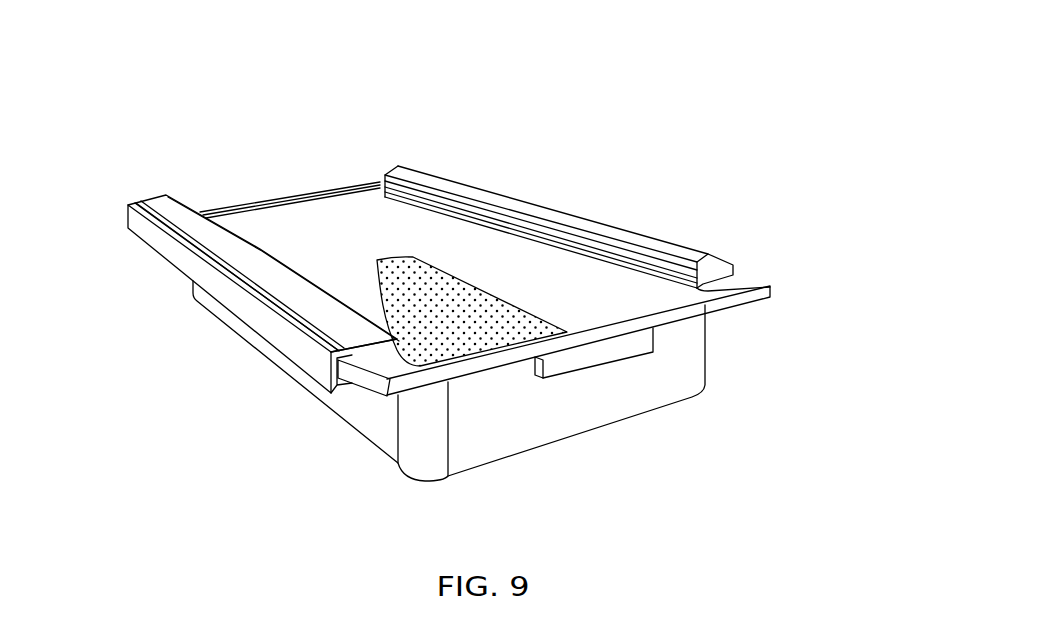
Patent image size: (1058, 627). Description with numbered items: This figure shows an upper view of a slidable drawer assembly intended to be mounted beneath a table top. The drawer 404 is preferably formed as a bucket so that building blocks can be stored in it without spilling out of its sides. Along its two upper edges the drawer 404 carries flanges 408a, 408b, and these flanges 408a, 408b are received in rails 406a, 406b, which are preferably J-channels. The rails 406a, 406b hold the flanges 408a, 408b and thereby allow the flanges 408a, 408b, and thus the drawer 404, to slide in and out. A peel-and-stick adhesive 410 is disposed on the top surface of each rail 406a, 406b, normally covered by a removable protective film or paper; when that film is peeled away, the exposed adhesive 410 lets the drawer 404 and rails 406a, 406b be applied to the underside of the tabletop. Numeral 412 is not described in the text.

The drawer 404 is at (527, 435).
The rail 406a is at (270, 330).
The rail 406b is at (723, 257).
The flange 408a is at (387, 380).
The flange 408b is at (770, 288).
The peel-and-stick adhesive 410 is at (395, 352).
The guide rail 412 is at (160, 196).